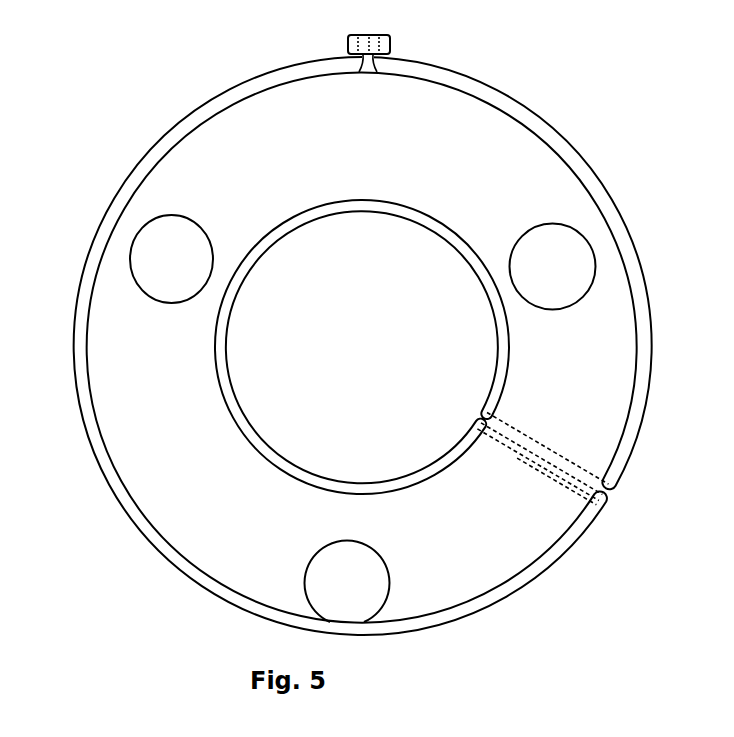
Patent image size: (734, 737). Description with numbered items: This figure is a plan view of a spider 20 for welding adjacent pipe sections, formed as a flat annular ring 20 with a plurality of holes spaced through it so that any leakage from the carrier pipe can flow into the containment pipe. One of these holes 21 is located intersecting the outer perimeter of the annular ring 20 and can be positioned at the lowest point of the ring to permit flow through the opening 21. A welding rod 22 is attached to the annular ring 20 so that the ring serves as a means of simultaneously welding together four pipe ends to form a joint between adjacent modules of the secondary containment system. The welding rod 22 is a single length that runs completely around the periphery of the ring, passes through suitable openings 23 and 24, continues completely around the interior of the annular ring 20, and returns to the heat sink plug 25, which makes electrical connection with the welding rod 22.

The spider 20 is at (378, 318).
The hole 21 is at (362, 599).
The welding rod 22 is at (621, 217).
The opening 23 is at (552, 443).
The opening 24 is at (534, 469).
The heat sink plug 25 is at (388, 36).